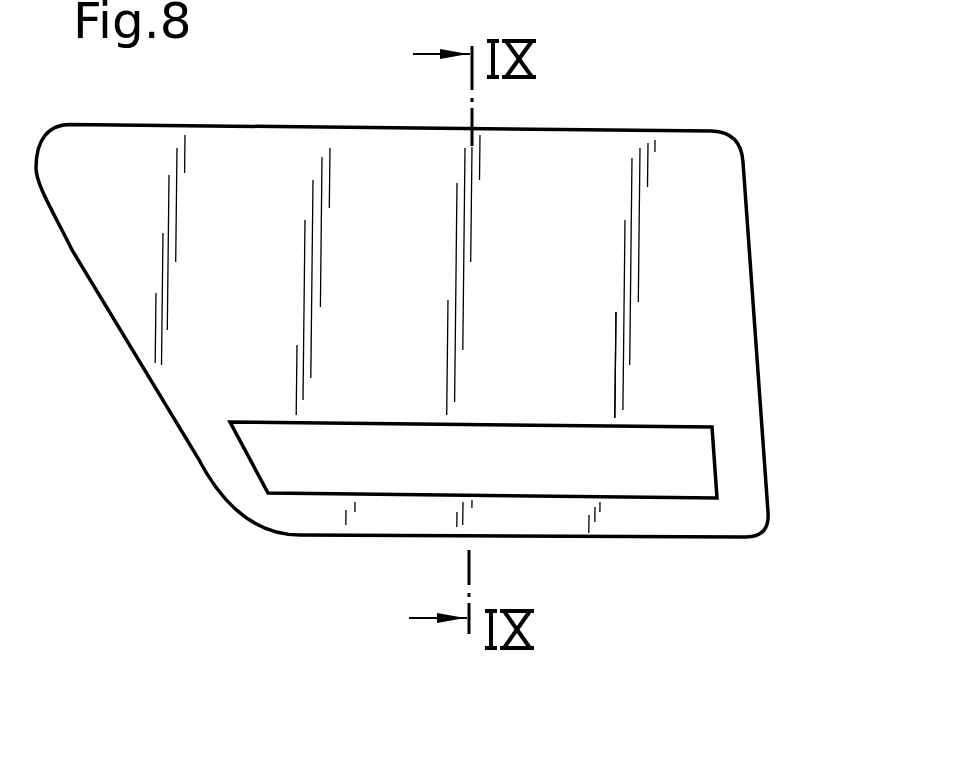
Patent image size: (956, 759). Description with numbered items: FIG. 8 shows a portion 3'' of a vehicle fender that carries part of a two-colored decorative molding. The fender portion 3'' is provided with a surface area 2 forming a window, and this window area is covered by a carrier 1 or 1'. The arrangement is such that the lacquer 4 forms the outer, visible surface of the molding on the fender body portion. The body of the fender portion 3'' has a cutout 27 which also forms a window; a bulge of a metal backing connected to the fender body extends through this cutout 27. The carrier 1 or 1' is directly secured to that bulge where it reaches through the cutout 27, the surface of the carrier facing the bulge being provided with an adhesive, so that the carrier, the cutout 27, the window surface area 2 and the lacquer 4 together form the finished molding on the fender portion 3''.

The carrier 1 is at (668, 390).
The carrier 1' is at (649, 453).
The surface area 2 is at (338, 460).
The portion of a fender 3'' is at (438, 330).
The lacquer 4 is at (400, 462).
The cutout 27 is at (556, 497).